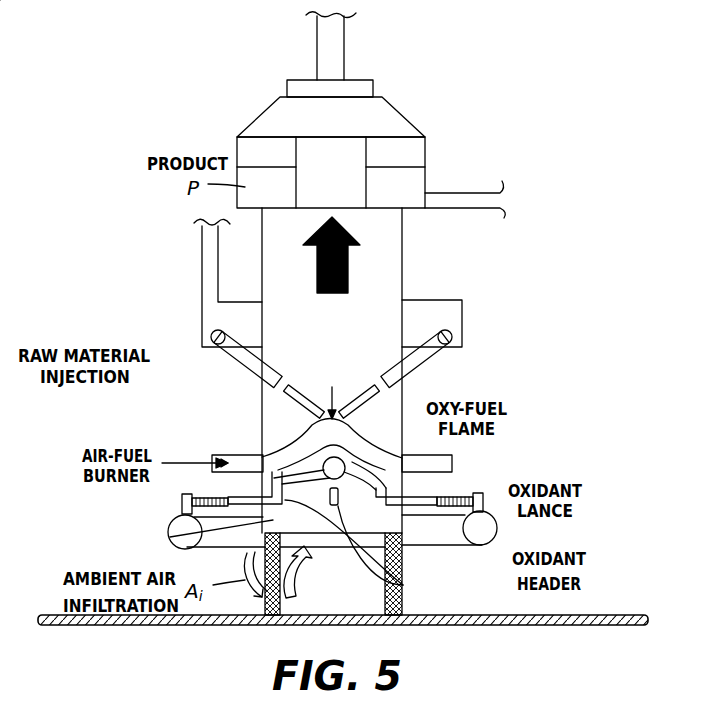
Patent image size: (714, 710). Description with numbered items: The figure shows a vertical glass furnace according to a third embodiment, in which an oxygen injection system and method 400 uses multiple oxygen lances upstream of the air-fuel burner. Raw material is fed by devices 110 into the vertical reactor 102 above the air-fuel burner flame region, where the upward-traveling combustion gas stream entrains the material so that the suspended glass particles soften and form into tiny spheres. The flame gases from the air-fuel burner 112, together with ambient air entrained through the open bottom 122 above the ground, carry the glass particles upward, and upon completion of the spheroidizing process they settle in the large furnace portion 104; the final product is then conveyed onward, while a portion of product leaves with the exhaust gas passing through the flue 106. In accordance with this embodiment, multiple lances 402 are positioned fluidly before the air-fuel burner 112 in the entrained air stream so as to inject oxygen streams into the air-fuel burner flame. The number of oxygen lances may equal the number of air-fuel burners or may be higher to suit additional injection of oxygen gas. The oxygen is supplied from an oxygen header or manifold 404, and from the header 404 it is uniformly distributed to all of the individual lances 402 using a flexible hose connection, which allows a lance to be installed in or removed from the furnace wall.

The oxygen injection system and method 400 is at (110, 156).
The vertical reactor 102 is at (385, 252).
The large furnace portion 104 is at (410, 145).
The flue 106 is at (334, 32).
The devices 110 is at (243, 357).
The air-fuel burner 112 is at (263, 470).
The open bottom 122 is at (168, 533).
The lances 402 is at (383, 495).
The oxygen header or manifold 404 is at (433, 542).